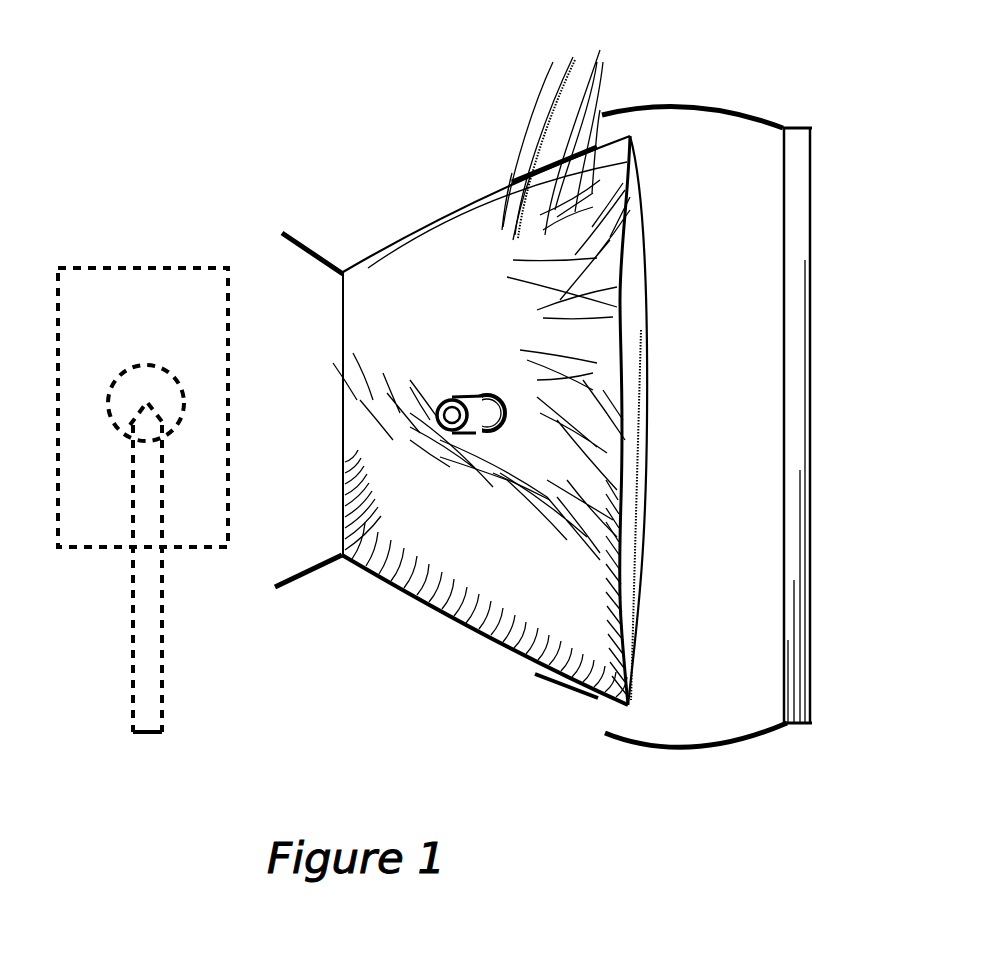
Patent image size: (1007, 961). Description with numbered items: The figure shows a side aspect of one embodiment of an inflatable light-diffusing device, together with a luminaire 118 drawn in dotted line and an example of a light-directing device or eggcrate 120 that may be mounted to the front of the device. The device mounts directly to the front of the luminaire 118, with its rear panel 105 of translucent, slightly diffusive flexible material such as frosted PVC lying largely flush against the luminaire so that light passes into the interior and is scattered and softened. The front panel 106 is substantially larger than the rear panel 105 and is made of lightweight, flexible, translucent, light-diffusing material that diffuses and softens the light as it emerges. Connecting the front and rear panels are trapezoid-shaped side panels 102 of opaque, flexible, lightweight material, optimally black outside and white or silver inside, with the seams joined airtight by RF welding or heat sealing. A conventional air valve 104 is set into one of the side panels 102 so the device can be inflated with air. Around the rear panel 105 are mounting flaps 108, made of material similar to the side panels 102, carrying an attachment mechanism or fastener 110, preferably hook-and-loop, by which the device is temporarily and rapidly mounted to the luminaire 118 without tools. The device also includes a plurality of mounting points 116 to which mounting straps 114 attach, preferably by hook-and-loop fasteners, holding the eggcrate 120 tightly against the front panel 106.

The opaque side panel 102 is at (495, 650).
The standard air valve 104 is at (474, 437).
The rear panel of light-diffusive translucent material 105 is at (343, 400).
The front panel of light-diffusive translucent material 106 is at (648, 560).
The flaps 108 is at (312, 600).
The attachment mechanism 110 is at (312, 600).
The mounting strap 114 is at (727, 102).
The mounting point 116 is at (560, 748).
The light source or luminaire 118 is at (150, 262).
The light-directing device 120 is at (805, 112).